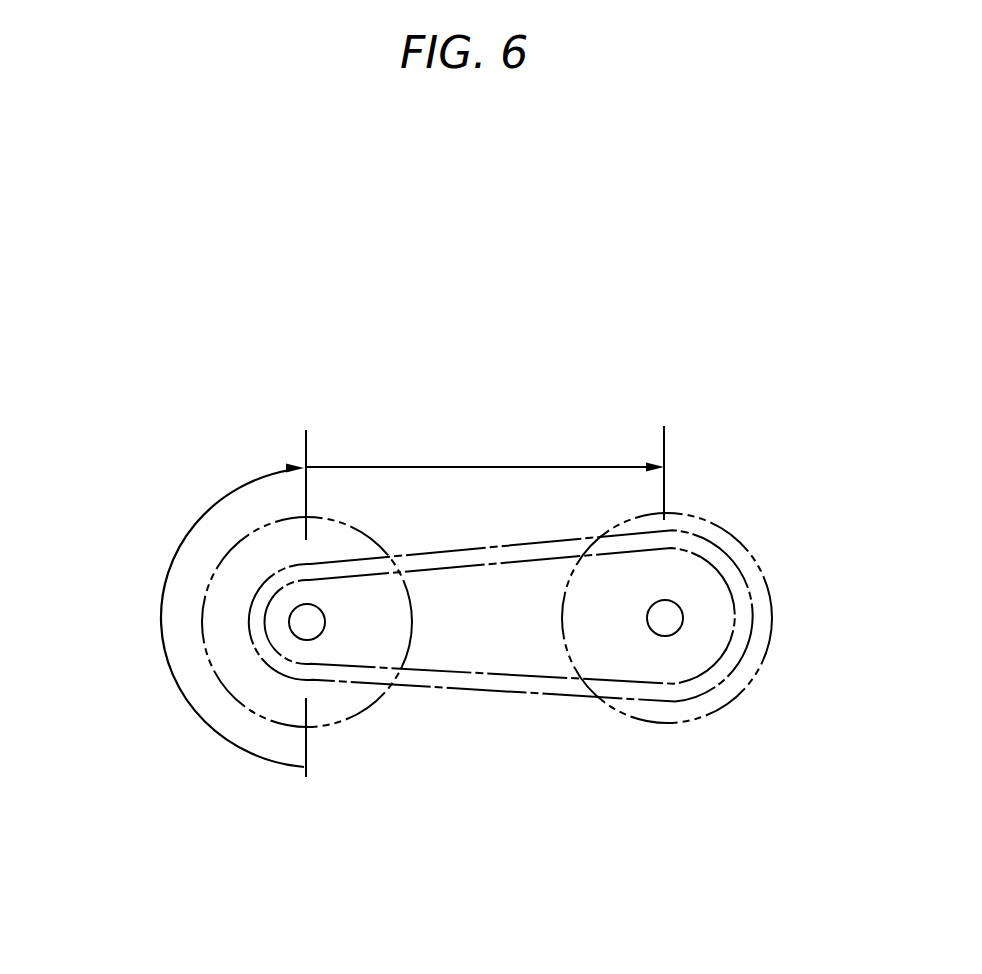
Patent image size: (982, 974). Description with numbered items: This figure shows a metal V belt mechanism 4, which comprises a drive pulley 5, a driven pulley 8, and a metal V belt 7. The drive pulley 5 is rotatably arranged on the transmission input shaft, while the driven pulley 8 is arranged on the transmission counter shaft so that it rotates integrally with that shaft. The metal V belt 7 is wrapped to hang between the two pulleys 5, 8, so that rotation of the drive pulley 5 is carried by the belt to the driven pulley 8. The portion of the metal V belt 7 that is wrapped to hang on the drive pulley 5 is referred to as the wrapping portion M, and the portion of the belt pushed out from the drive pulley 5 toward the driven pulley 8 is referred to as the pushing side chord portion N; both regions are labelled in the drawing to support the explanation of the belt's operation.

The metal V belt mechanism 4 is at (441, 567).
The drive pulley 5 is at (348, 710).
The metal V belt 7 is at (497, 692).
The driven pulley 8 is at (728, 698).